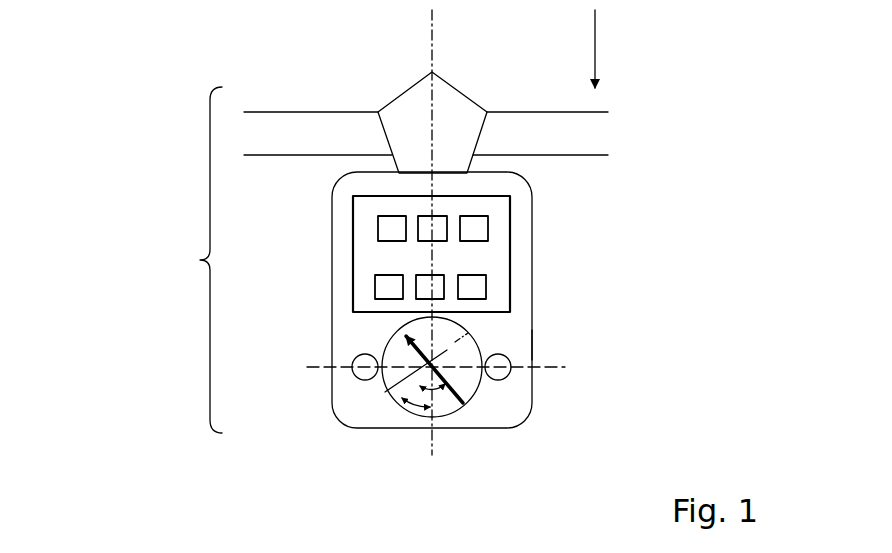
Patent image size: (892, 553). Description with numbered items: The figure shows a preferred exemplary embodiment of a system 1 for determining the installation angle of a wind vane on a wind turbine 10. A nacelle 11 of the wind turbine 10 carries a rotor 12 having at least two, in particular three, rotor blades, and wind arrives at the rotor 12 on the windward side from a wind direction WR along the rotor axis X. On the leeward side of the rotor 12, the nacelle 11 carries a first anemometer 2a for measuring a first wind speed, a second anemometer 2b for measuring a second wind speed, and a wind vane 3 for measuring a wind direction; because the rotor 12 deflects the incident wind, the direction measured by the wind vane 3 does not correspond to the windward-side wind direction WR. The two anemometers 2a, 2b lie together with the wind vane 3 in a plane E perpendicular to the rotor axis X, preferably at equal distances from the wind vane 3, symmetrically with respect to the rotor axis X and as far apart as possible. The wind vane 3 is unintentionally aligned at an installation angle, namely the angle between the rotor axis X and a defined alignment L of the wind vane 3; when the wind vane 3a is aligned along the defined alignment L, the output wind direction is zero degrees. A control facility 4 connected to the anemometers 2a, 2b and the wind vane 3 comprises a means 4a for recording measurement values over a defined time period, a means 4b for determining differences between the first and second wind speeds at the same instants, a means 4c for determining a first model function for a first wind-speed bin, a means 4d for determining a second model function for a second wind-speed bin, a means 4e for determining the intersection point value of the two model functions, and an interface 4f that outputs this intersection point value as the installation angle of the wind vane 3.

The system 1 is at (143, 72).
The wind turbine 10 is at (344, 260).
The nacelle 11 is at (533, 347).
The rotor 12 is at (457, 87).
The first anemometer 2a is at (367, 380).
The second anemometer 2b is at (497, 380).
The wind vane 3 is at (479, 402).
The wind vane of the wind vane 3a is at (383, 392).
The control facility 4 is at (511, 255).
The means for recording measurement values 4a is at (378, 226).
The means for determining differences 4b is at (488, 226).
The means for determining a first model function 4c is at (375, 287).
The means for determining a second model function 4d is at (486, 288).
The means for determining an intersection point value 4e is at (433, 300).
The interface 4f is at (433, 216).
The rotor axis X is at (432, 35).
The wind direction WR is at (597, 50).
The plane E is at (316, 362).
The defined alignment L is at (447, 350).